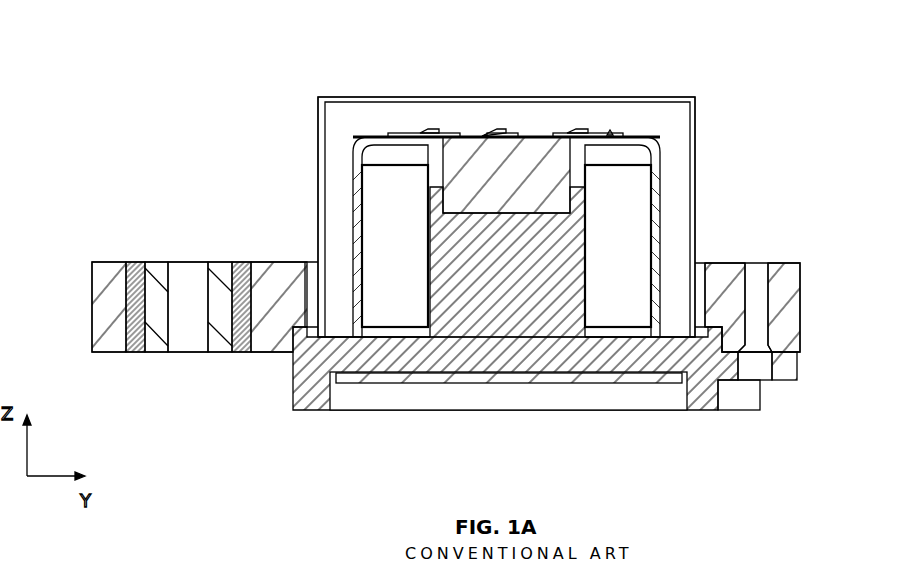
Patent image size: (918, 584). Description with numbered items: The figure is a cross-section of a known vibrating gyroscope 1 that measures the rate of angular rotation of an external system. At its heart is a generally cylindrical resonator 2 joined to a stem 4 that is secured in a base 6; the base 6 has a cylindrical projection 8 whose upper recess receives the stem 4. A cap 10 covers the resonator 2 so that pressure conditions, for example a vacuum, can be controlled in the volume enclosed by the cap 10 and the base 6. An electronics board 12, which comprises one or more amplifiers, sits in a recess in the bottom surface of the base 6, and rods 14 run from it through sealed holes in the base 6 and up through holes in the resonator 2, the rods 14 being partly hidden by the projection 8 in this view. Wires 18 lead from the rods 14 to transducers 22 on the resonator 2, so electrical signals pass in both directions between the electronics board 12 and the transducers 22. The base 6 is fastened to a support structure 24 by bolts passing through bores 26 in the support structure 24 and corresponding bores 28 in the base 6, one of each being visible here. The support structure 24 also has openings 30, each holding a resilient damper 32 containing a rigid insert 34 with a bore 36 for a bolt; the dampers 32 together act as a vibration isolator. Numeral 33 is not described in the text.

The vibrating gyroscope 1 is at (188, 100).
The resonator 2 is at (358, 190).
The stem 4 is at (508, 181).
The base 6 is at (448, 358).
The cylindrical projection 8 is at (537, 257).
The cap 10 is at (618, 97).
The electronics board 12 is at (552, 377).
The rods 14 is at (427, 162).
The wires 18 is at (425, 133).
The transducers 22 is at (390, 133).
The support structure 24 is at (110, 302).
The bores 26 is at (760, 303).
The bores 28 is at (755, 368).
The openings 30 is at (188, 372).
The damper 32 is at (133, 262).
The flange slot 33 is at (163, 338).
The insert 34 is at (153, 262).
The bore 36 is at (190, 280).